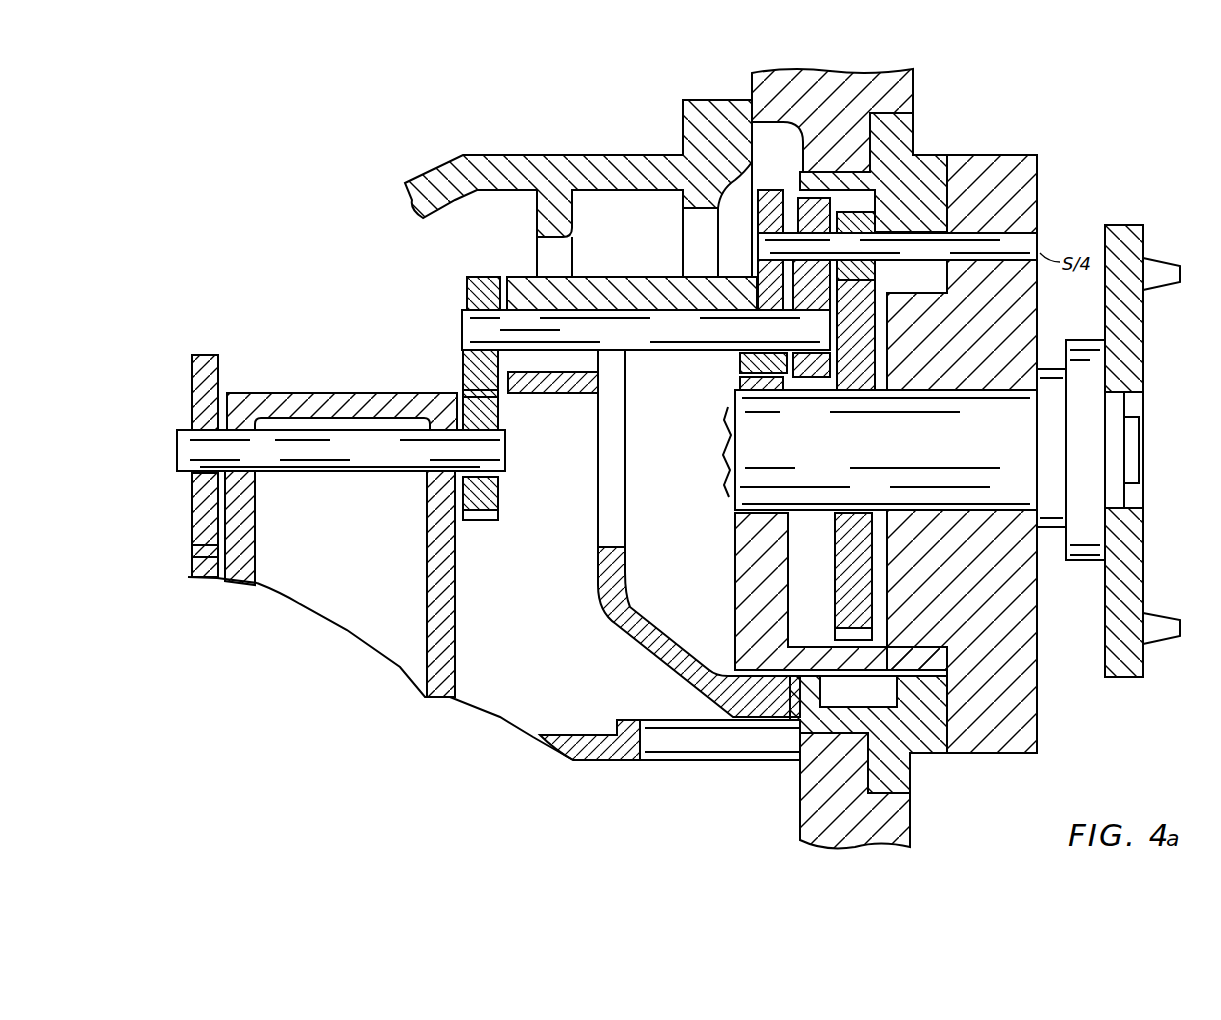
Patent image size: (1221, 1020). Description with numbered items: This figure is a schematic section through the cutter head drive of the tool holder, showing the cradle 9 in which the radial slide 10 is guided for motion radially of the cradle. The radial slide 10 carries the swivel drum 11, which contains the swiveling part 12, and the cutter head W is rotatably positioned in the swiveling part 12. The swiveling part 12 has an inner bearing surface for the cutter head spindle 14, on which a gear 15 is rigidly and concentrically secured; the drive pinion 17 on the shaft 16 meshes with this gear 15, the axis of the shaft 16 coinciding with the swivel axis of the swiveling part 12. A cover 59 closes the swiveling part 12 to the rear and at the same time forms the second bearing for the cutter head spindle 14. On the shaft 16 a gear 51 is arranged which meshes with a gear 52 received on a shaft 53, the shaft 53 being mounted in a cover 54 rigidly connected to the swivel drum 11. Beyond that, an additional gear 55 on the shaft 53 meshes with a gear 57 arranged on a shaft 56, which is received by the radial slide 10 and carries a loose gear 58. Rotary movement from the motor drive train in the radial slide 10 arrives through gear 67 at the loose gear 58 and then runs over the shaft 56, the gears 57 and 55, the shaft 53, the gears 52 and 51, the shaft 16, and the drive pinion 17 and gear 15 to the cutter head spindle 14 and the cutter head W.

The cradle 9 is at (550, 155).
The radial slide 10 is at (905, 84).
The swivel drum 11 is at (912, 136).
The swiveling part 12 is at (1032, 712).
The cutter head spindle 14 is at (998, 427).
The gear 15 is at (840, 557).
The shaft 16 is at (1040, 248).
The drive pinion 17 is at (850, 222).
The gear 51 is at (798, 196).
The gear 52 is at (742, 370).
The shaft 53 is at (466, 335).
The cover 54 is at (615, 614).
The gear 55 is at (470, 296).
The shaft 56 is at (185, 450).
The gear 57 is at (497, 495).
The loose gear 58 is at (200, 385).
The cover 59 is at (748, 552).
The gear 67 is at (188, 580).
The cutter head W is at (1152, 375).